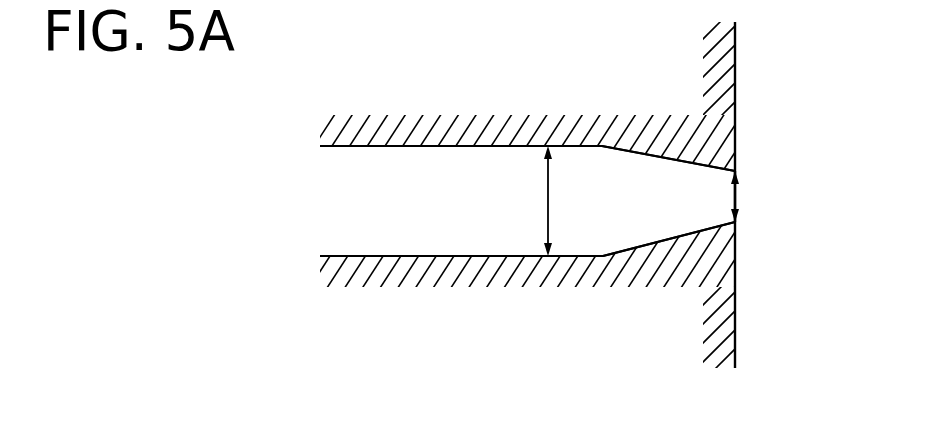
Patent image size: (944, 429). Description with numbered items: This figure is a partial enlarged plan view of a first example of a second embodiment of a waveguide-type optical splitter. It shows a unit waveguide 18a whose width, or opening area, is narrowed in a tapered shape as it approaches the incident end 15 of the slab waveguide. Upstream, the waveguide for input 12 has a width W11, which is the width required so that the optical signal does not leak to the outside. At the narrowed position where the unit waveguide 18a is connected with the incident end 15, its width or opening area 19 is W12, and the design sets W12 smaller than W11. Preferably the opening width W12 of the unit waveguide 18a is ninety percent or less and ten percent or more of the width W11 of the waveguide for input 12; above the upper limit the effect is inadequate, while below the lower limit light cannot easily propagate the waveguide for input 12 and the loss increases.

The waveguide for input 12 is at (462, 146).
The unit waveguide 18a is at (660, 152).
The incident end 15 is at (735, 48).
The width (opening area) 19 is at (735, 169).
The width of the waveguide for input W11 is at (584, 201).
The opening width of the unit waveguide W12 is at (776, 196).